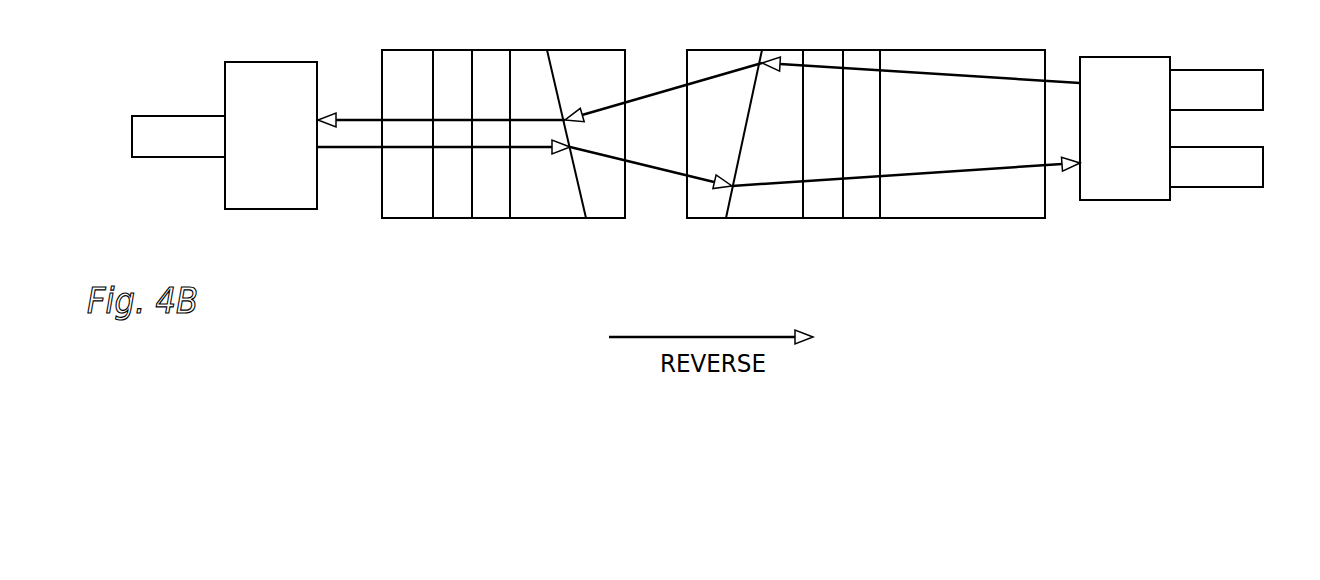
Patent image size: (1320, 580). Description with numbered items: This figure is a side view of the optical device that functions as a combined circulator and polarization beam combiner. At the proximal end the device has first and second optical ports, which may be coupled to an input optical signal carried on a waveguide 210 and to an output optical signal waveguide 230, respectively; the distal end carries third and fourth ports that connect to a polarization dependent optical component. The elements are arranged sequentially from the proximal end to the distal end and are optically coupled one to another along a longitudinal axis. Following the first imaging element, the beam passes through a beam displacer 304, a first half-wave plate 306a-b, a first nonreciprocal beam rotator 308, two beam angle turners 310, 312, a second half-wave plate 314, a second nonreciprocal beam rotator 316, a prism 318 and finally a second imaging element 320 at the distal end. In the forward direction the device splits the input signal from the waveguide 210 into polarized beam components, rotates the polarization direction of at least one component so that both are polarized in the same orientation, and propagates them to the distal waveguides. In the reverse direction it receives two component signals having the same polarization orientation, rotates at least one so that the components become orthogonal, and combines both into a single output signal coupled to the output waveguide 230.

The input waveguide 210 is at (1215, 70).
The output optical signal waveguide 230 is at (1218, 187).
The beam displacer 304 is at (962, 218).
The first half-wave plate 306a-b is at (858, 220).
The first nonreciprocal beam rotator 308 is at (822, 220).
The beam angle turner 310 is at (687, 225).
The beam angle turner 312 is at (625, 225).
The second half-wave plate 314 is at (490, 218).
The second nonreciprocal beam rotator 316 is at (450, 218).
The prism 318 is at (400, 218).
The second imaging element 320 is at (270, 62).